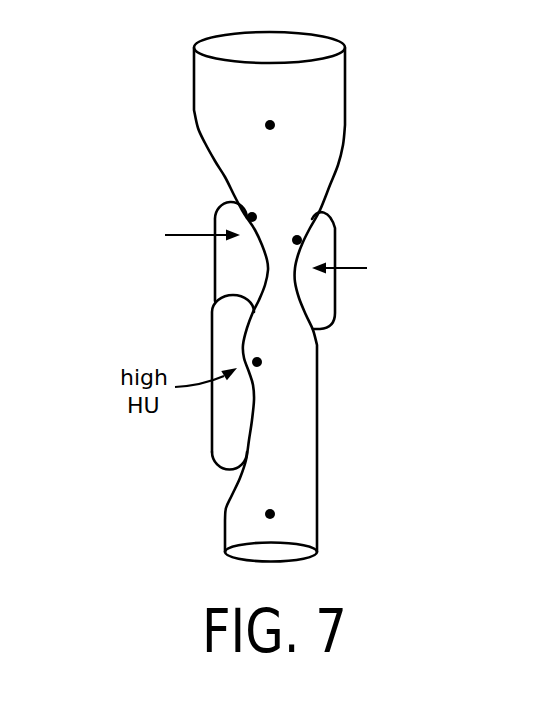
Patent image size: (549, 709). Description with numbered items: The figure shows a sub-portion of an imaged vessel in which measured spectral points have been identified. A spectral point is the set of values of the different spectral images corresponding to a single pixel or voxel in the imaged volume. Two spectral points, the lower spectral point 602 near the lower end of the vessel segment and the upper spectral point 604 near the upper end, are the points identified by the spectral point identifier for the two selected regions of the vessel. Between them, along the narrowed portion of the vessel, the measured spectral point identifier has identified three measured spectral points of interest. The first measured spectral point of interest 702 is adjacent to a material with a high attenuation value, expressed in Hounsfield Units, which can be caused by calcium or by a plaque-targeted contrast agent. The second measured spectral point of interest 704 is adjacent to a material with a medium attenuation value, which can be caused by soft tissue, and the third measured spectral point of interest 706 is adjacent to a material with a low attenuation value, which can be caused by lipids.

The spectral point (A_U) 604 is at (267, 121).
The measured spectral point of interest (B_2) 704 is at (248, 216).
The measured spectral point of interest (B_3) 706 is at (333, 220).
The measured spectral point of interest (B_1) 702 is at (261, 365).
The spectral point (A_L) 602 is at (268, 510).